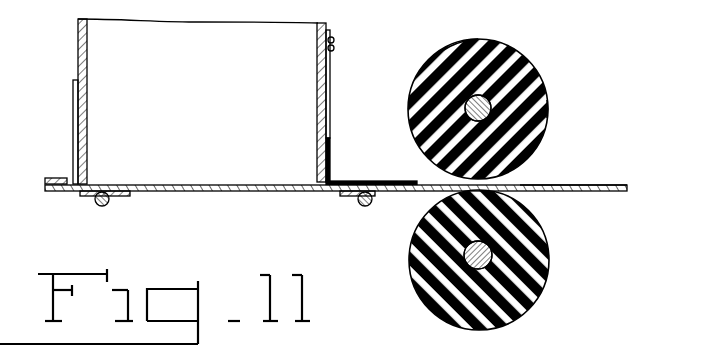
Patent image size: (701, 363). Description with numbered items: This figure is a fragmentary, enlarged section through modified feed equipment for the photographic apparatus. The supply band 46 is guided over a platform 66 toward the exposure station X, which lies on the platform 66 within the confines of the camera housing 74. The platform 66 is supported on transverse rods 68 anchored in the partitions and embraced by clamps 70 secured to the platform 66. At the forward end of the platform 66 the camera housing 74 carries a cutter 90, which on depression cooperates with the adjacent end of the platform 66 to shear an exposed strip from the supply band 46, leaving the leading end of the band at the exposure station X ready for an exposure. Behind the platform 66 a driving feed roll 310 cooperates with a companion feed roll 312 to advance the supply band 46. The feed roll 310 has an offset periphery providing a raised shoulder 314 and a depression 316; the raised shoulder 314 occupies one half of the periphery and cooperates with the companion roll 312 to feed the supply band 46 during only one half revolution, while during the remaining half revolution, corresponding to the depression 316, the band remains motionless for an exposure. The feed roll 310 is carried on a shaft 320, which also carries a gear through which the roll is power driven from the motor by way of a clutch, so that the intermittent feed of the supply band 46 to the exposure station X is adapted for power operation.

The housing 74 is at (79, 58).
The cutter 90 is at (75, 135).
The platform 66 is at (303, 194).
The transverse rods 68 is at (108, 200).
The clamps 70 is at (102, 206).
The feed roll 310 is at (476, 38).
The raised shoulder 314 is at (428, 63).
The depression 316 is at (546, 103).
The shaft 320 is at (527, 97).
The feed roll 312 is at (552, 273).
The supply band 46 is at (537, 182).
The exposure station X is at (234, 178).